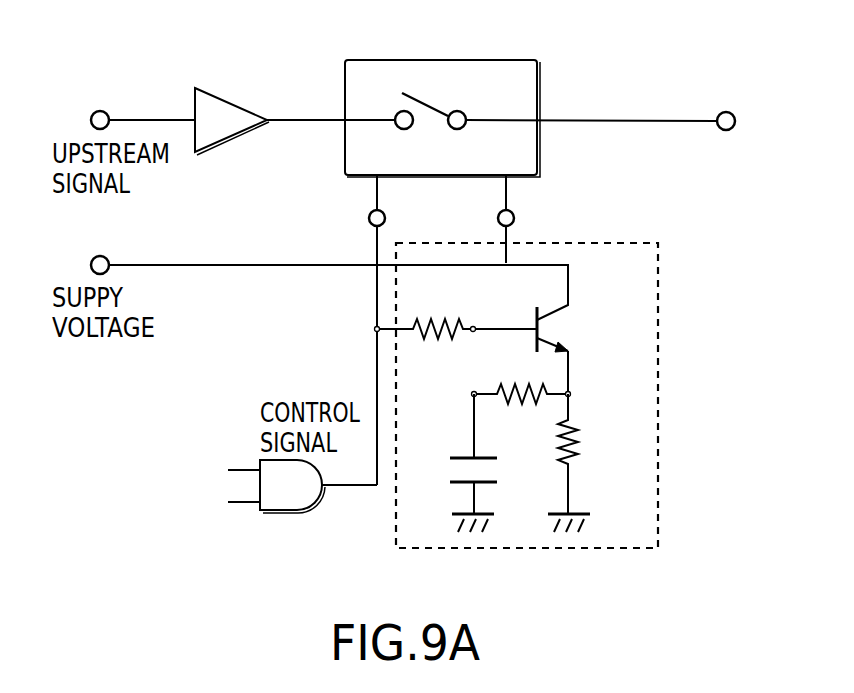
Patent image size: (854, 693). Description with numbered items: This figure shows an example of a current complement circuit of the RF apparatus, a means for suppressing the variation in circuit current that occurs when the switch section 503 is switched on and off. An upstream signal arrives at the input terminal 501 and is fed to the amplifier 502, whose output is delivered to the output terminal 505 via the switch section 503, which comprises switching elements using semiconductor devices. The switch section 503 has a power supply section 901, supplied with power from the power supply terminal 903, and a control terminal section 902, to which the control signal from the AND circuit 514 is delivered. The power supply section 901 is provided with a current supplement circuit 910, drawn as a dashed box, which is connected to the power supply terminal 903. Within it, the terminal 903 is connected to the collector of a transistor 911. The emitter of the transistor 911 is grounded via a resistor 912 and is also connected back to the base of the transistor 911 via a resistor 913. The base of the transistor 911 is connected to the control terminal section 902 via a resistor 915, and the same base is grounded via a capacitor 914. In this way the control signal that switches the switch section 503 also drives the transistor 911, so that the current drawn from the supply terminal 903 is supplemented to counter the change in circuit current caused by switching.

The upstream signal input terminal 501 is at (106, 112).
The amplifier 502 is at (216, 94).
The switch section 503 is at (437, 60).
The output terminal 505 is at (721, 112).
The AND circuit 514 is at (284, 518).
The power supply section 901 is at (498, 219).
The control terminal section 902 is at (369, 219).
The power supply terminal 903 is at (107, 258).
The current supplement circuit 910 is at (626, 241).
The transistor 911 is at (556, 331).
The resistor 912 is at (580, 450).
The resistor 913 is at (518, 408).
The capacitor 914 is at (466, 454).
The resistor 915 is at (436, 320).